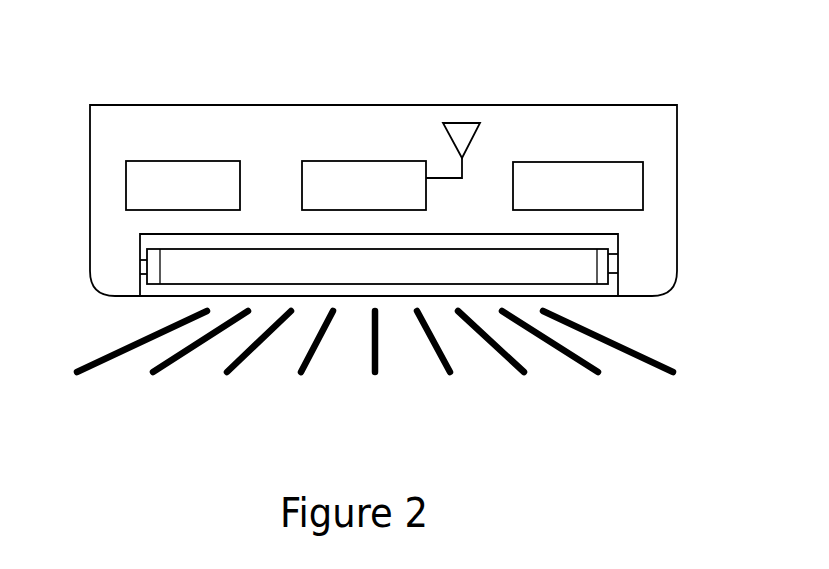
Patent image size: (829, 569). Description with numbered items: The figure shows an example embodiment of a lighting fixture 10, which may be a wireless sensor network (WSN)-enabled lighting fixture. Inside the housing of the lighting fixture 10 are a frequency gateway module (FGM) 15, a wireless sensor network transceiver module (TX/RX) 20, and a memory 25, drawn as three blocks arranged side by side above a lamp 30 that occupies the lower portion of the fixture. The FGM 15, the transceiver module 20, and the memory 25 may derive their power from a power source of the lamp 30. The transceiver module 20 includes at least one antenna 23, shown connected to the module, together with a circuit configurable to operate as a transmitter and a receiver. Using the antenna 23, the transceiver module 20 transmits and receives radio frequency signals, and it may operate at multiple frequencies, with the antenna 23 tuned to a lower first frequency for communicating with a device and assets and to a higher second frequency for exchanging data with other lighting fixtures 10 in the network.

The lighting fixture 10 is at (92, 45).
The frequency gateway module 15 is at (225, 196).
The wireless sensor network transceiver module 20 is at (405, 196).
The antenna 23 is at (471, 141).
The memory 25 is at (633, 196).
The lamp 30 is at (600, 264).